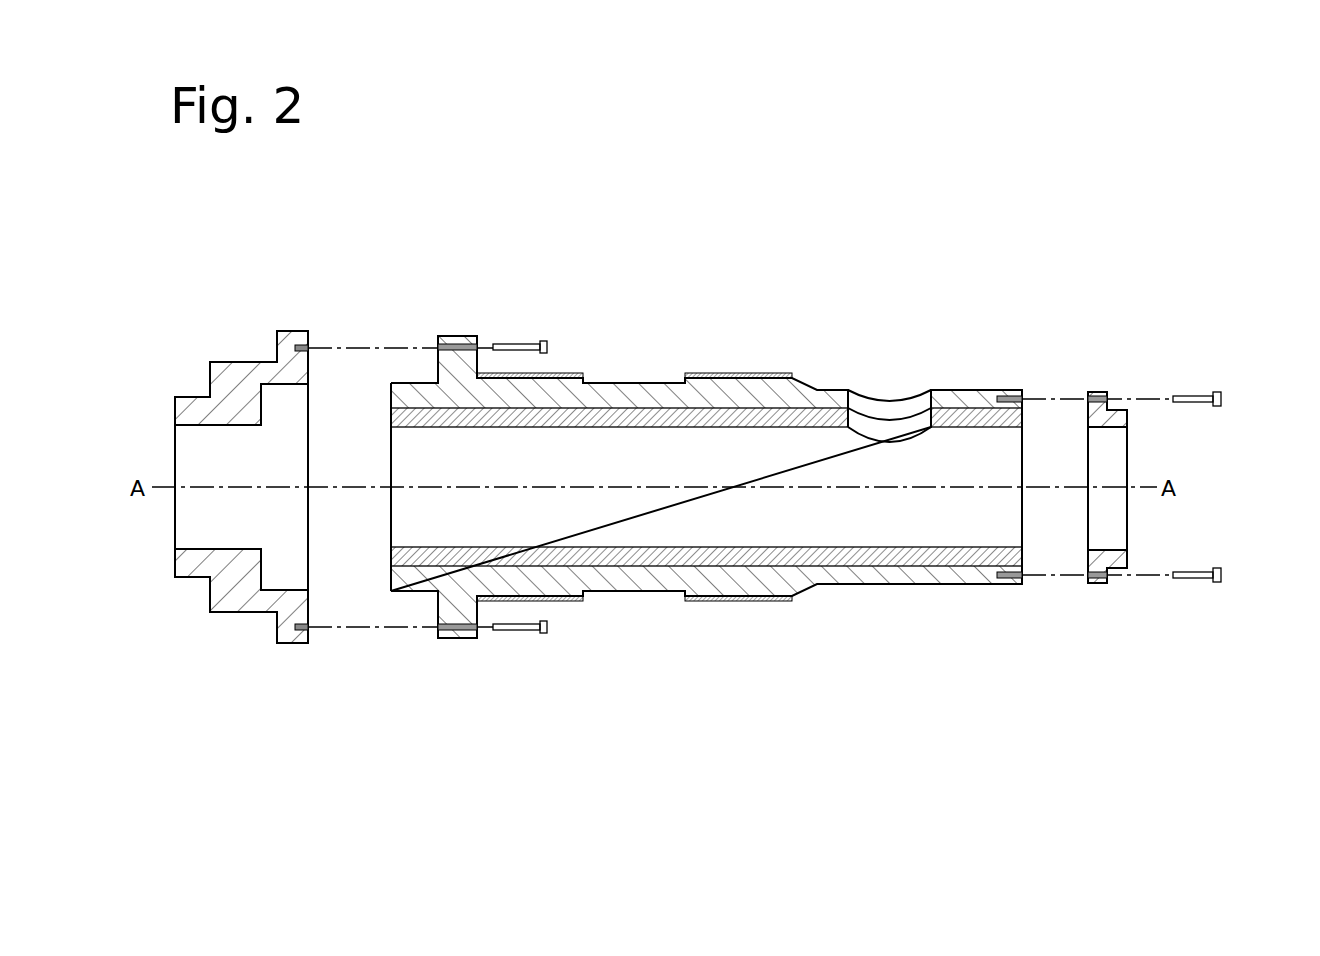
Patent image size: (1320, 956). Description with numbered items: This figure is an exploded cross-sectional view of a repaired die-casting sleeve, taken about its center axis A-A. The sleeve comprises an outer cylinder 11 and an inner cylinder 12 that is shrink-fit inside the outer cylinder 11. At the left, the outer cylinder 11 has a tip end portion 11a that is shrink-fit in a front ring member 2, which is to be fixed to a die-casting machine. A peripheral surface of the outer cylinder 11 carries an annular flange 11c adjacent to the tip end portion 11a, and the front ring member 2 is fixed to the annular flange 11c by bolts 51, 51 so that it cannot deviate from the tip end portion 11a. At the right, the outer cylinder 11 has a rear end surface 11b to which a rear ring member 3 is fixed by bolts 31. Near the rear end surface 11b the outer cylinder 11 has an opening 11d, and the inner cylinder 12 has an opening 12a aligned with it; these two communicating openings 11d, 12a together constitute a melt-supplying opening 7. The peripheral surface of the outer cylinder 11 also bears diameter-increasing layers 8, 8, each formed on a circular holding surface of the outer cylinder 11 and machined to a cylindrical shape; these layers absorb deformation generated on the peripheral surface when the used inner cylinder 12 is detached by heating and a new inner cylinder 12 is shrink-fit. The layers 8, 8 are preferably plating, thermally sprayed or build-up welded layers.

The front ring member 2 is at (233, 371).
The rear ring member 3 is at (1122, 418).
The melt-supplying opening 7 is at (899, 365).
The diameter-increasing layer 8 is at (571, 373).
The outer cylinder 11 is at (708, 457).
The tip end portion 11a is at (400, 395).
The rear end surface 11b is at (1022, 397).
The annular flange 11c is at (460, 336).
The opening 11d is at (906, 402).
The inner cylinder 12 is at (627, 418).
The opening 12a is at (950, 315).
The bolts 31 is at (1222, 399).
The bolts 51 is at (543, 341).